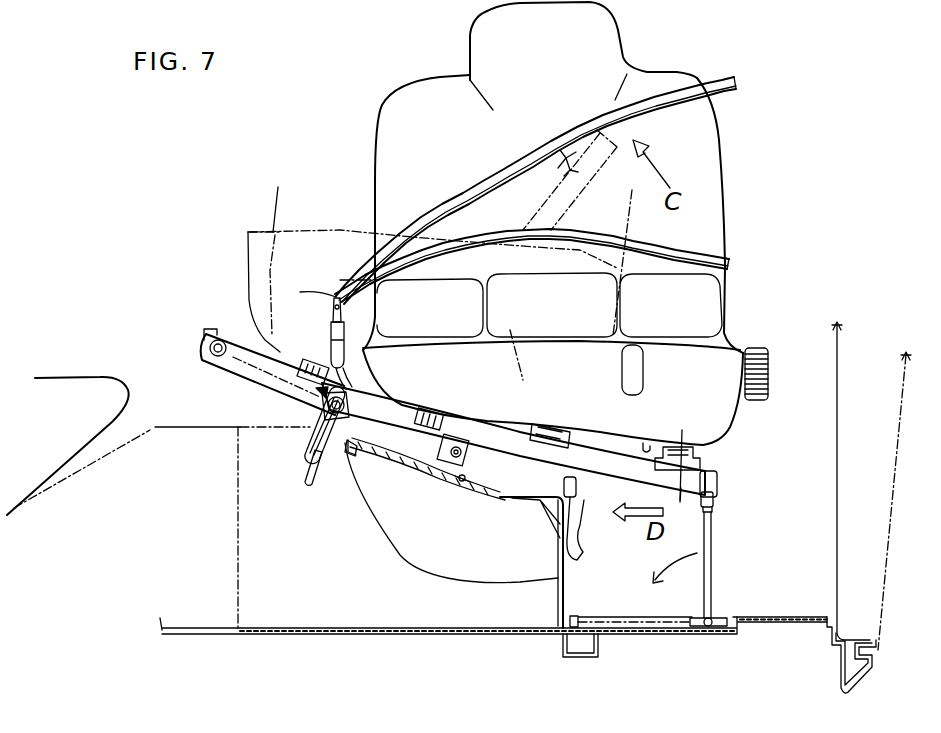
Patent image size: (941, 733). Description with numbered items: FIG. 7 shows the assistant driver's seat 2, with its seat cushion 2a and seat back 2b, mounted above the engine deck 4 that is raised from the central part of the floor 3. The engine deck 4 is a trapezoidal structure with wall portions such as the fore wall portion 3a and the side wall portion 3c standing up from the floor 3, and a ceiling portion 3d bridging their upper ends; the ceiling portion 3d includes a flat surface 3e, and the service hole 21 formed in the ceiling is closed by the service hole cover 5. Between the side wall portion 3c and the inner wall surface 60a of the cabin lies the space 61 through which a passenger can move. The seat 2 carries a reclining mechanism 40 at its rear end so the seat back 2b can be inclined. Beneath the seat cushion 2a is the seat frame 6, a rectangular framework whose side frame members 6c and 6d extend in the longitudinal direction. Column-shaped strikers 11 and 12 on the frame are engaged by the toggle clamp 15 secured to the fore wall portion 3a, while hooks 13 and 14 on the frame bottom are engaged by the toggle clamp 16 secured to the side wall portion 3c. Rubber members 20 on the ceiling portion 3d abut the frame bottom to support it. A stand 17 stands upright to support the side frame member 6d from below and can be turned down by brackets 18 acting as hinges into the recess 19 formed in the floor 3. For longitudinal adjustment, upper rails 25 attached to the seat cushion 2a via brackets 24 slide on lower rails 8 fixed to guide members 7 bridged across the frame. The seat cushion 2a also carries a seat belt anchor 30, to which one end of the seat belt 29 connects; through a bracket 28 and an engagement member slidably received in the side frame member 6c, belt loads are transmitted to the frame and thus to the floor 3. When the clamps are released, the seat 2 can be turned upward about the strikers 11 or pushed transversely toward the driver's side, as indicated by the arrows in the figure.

The assistant driver's seat 2 is at (527, 223).
The seat cushion 2a is at (728, 421).
The seat back 2b is at (717, 212).
The floor 3 is at (493, 552).
The fore wall portion 3a is at (415, 632).
The side wall portion 3c is at (563, 598).
The ceiling portion 3d is at (483, 478).
The flat surface 3e is at (262, 427).
The engine deck 4 is at (213, 418).
The service hole cover 5 is at (467, 482).
The seat frame 6 is at (588, 180).
The side frame member 6c is at (320, 397).
The side frame member 6d is at (717, 486).
The guide member 7 is at (697, 465).
The lower rail 8 is at (683, 508).
The striker 11 is at (312, 414).
The striker 12 is at (452, 458).
The hook 13 is at (577, 497).
The hook 14 is at (713, 508).
The toggle clamp 15 is at (310, 476).
The toggle clamp 16 is at (577, 550).
The stand 17 is at (713, 575).
The bracket 18 is at (696, 627).
The recess 19 is at (735, 615).
The rubber member 20 is at (357, 450).
The service hole 21 is at (393, 484).
The bracket 24 is at (644, 443).
The upper rail 25 is at (682, 452).
The bracket 28 is at (402, 410).
The seat belt 29 is at (723, 78).
The seat belt anchor 30 is at (331, 340).
The reclining mechanism 40 is at (768, 372).
The inner wall surface 60a is at (828, 398).
The space 61 is at (796, 549).